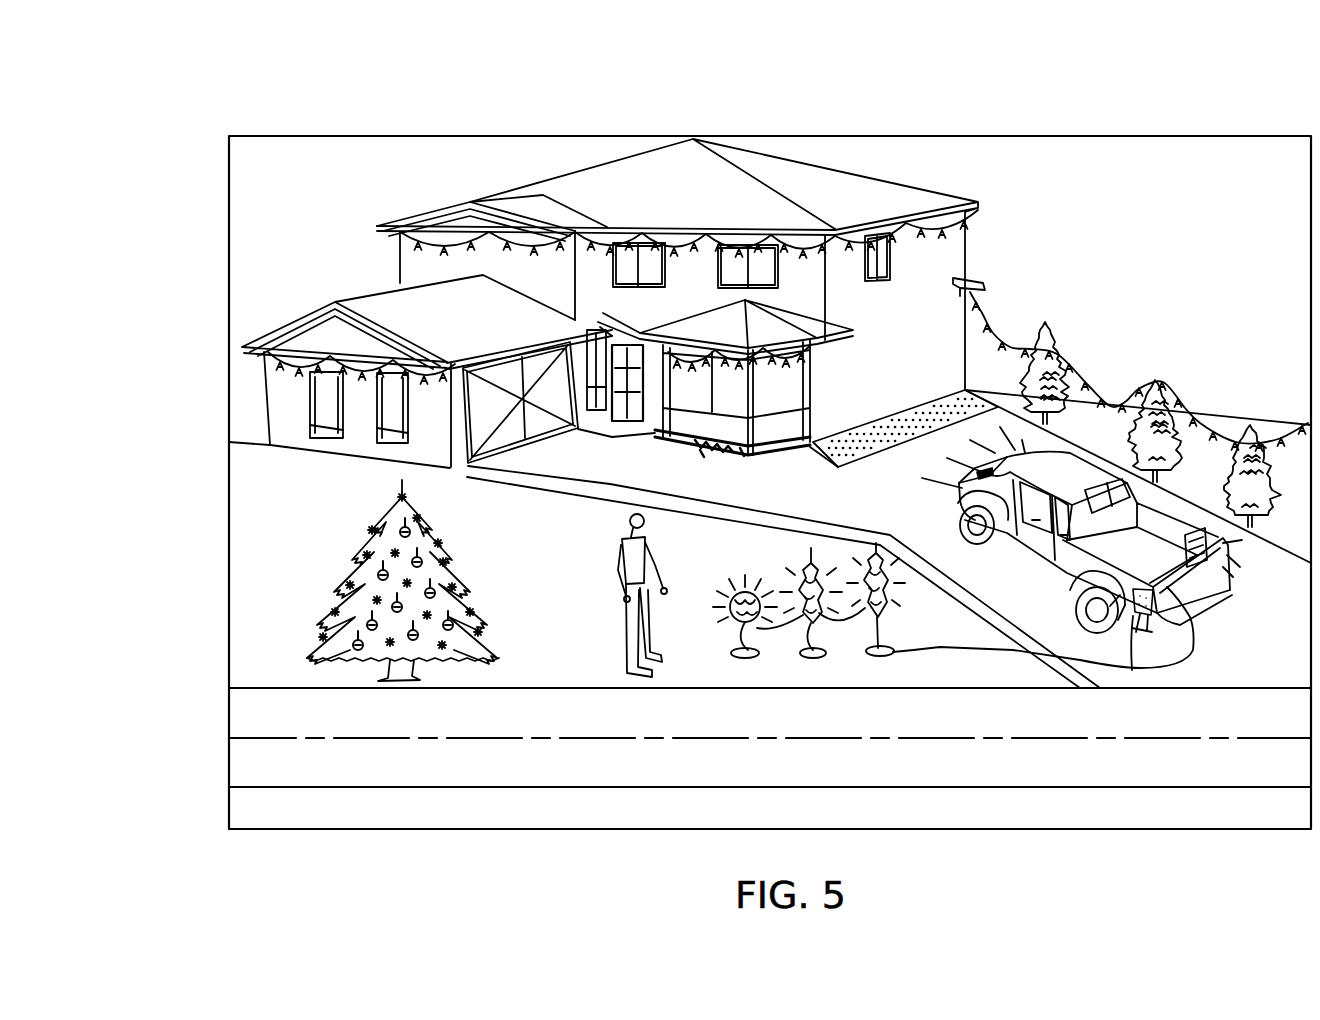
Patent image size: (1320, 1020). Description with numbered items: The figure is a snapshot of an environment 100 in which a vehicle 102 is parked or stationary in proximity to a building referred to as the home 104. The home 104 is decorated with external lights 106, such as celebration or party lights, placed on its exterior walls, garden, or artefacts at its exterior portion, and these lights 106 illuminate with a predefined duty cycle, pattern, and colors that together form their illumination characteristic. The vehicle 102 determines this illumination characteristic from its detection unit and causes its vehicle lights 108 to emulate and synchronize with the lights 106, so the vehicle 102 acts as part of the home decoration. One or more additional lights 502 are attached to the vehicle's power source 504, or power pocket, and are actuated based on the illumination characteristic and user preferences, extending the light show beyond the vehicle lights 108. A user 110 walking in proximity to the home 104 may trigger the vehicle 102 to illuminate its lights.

The environment 100 is at (206, 96).
The home 104 is at (920, 195).
The external lights 106 is at (980, 224).
The additional lights 502 is at (811, 563).
The vehicle power source 504 is at (1195, 532).
The vehicle 102 is at (1030, 568).
The vehicle lights 108 is at (1132, 670).
The user 110 is at (645, 552).